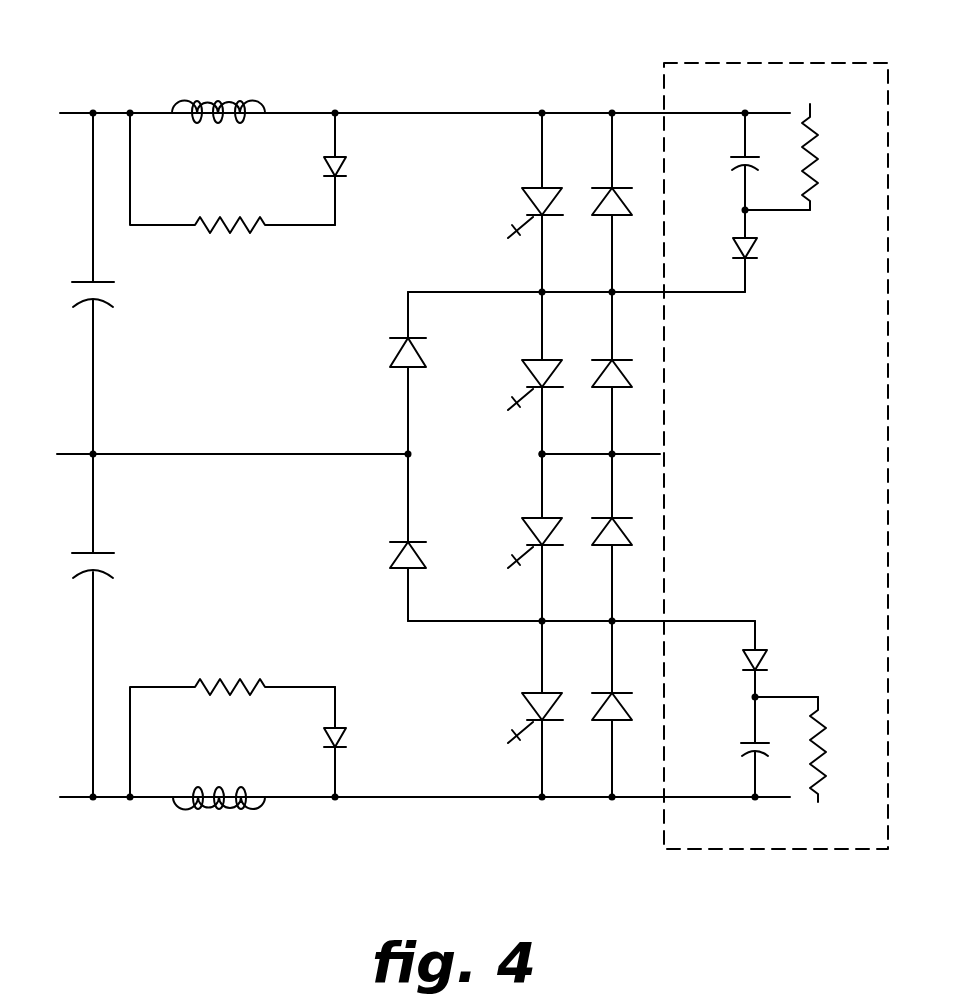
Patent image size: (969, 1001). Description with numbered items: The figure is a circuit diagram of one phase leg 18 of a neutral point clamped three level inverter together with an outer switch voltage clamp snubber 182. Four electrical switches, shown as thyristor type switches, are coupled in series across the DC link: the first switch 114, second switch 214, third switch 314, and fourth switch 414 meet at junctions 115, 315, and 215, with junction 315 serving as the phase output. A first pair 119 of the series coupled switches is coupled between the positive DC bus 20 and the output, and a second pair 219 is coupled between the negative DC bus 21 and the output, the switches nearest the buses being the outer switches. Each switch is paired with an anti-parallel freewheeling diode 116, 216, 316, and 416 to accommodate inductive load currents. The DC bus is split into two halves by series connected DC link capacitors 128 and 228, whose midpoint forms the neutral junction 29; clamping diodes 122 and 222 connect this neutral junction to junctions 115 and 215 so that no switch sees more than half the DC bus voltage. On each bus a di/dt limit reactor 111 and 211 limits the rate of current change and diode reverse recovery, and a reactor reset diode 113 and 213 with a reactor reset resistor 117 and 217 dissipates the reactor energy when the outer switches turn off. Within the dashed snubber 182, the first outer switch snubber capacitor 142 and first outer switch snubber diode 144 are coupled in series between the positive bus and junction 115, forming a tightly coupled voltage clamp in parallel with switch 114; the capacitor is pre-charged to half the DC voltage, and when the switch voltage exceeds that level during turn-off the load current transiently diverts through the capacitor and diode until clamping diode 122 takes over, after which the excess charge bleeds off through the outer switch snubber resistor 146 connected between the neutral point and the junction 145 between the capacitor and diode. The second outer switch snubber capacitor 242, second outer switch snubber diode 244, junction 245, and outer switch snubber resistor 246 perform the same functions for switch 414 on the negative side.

The phase leg 18 is at (579, 84).
The positive DC bus 20 is at (445, 113).
The negative DC bus 21 is at (437, 797).
The neutral junction 29 is at (93, 454).
The reactor 111 is at (230, 98).
The reactor reset diode 113 is at (323, 165).
The first switch 114 is at (525, 188).
The junction 115 is at (542, 292).
The freewheeling diode 116 is at (620, 188).
The reactor reset resistor 117 is at (206, 225).
The first pair of series coupled switches 119 is at (582, 219).
The clamping diode 122 is at (393, 355).
The DC link capacitor 128 is at (100, 282).
The first outer switch snubber capacitor 142 is at (738, 168).
The first outer switch snubber diode 144 is at (750, 254).
The junction 145 is at (750, 212).
The outer switch snubber resistor 146 is at (810, 175).
The outer switch voltage clamp snubber 182 is at (760, 850).
The reactor 211 is at (210, 812).
The reactor reset diode 213 is at (323, 737).
The second switch 214 is at (528, 372).
The junction 215 is at (535, 621).
The freewheeling diode 216 is at (620, 360).
The reactor reset resistor 217 is at (214, 690).
The second pair of series coupled switches 219 is at (583, 556).
The clamping diode 222 is at (393, 557).
The DC link capacitor 228 is at (100, 553).
The second outer switch snubber capacitor 242 is at (748, 738).
The second outer switch snubber diode 244 is at (758, 652).
The junction 245 is at (758, 696).
The outer switch snubber resistor 246 is at (820, 726).
The third switch 314 is at (526, 530).
The junction 315 is at (542, 454).
The freewheeling diode 316 is at (620, 518).
The fourth switch 414 is at (525, 718).
The freewheeling diode 416 is at (618, 720).